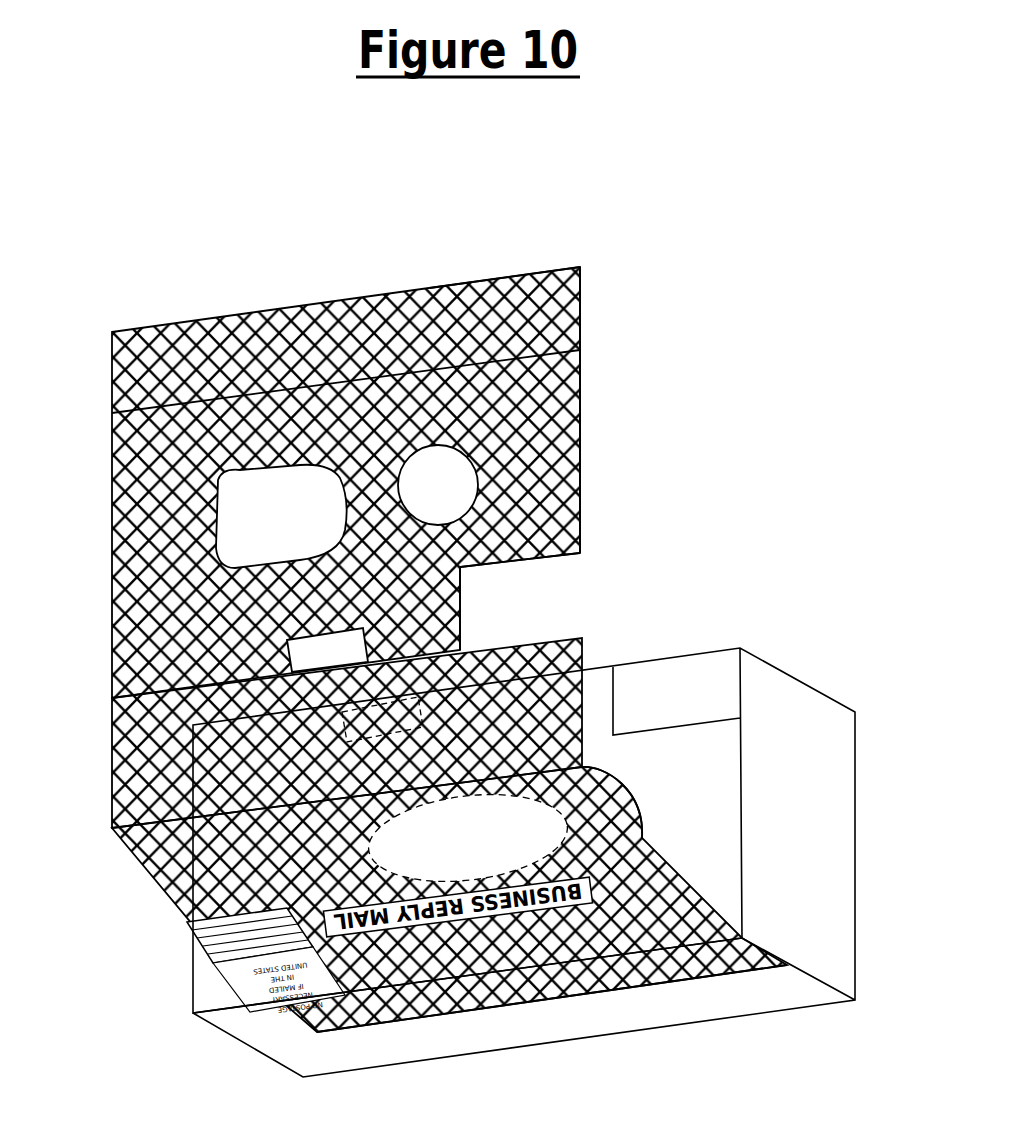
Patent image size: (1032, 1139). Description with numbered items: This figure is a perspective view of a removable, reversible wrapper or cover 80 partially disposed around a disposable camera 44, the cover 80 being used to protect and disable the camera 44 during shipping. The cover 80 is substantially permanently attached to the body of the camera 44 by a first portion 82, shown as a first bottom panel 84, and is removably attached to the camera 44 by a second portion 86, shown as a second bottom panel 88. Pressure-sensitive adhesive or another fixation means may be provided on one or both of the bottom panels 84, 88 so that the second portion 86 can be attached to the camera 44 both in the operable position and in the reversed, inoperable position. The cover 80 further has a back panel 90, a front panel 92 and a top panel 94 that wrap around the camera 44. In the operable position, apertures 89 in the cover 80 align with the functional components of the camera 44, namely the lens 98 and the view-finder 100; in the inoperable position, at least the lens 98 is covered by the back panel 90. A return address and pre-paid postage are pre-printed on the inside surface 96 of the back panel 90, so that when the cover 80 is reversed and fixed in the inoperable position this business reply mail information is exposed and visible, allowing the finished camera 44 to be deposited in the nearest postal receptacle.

The camera 44 is at (853, 746).
The reversible wrapper or cover 80 is at (568, 518).
The first portion 82 is at (702, 968).
The first bottom panel 84 is at (702, 968).
The second portion 86 is at (580, 306).
The second bottom panel 88 is at (580, 306).
The apertures 89 is at (271, 520).
The back panel 90 is at (642, 838).
The front panel 92 is at (582, 427).
The top panel 94 is at (582, 640).
The inside surface 96 is at (697, 915).
The lens 98 is at (612, 775).
The view-finder 100 is at (377, 719).